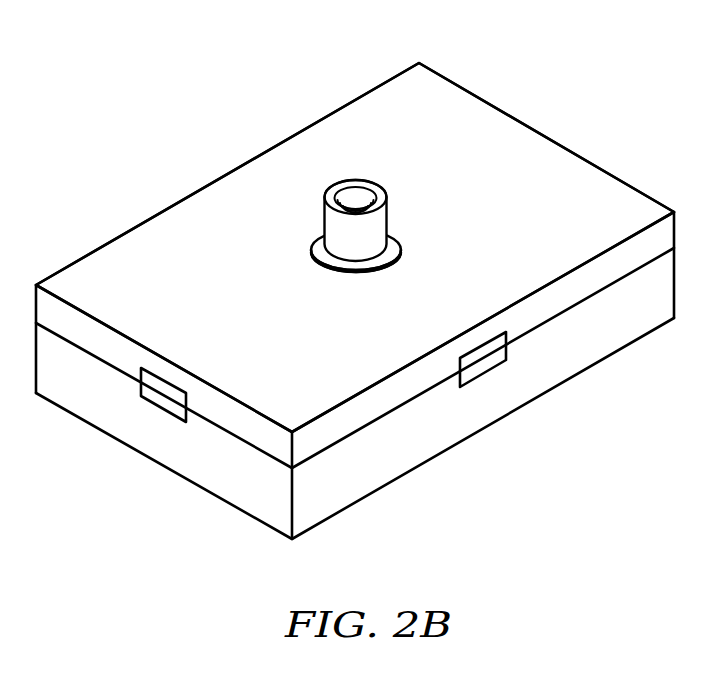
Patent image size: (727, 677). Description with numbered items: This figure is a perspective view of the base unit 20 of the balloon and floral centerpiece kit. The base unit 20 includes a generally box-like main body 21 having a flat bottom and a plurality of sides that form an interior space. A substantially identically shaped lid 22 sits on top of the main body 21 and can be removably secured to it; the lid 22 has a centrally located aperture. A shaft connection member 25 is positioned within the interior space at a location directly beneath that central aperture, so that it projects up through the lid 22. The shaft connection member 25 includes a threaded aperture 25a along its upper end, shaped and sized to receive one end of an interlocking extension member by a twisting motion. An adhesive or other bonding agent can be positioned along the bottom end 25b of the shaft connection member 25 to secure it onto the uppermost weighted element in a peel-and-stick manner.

The base unit 20 is at (355, 278).
The main body 21 is at (170, 437).
The lid 22 is at (576, 190).
The shaft connection member 25 is at (327, 180).
The threaded aperture 25a is at (351, 190).
The bottom end 25b is at (392, 238).